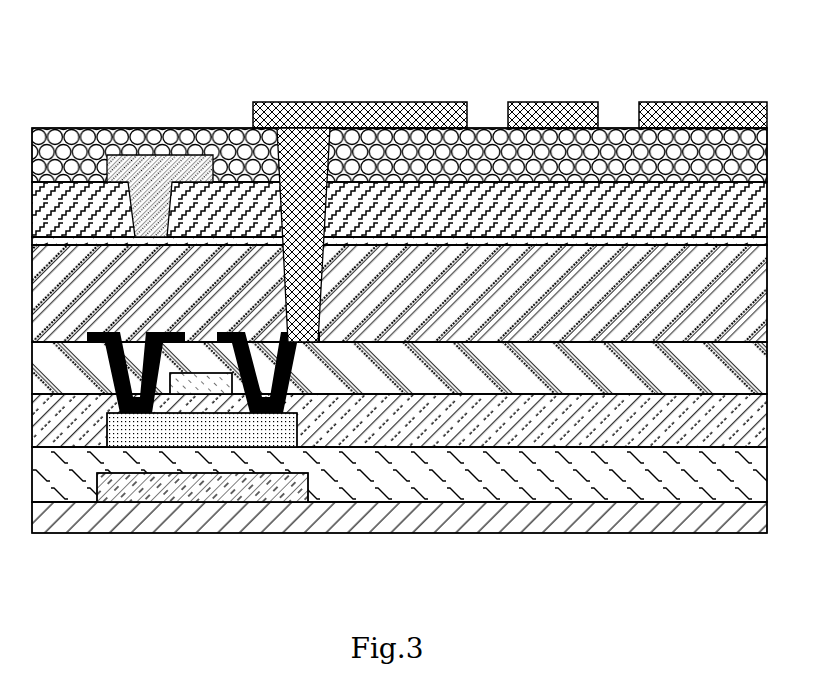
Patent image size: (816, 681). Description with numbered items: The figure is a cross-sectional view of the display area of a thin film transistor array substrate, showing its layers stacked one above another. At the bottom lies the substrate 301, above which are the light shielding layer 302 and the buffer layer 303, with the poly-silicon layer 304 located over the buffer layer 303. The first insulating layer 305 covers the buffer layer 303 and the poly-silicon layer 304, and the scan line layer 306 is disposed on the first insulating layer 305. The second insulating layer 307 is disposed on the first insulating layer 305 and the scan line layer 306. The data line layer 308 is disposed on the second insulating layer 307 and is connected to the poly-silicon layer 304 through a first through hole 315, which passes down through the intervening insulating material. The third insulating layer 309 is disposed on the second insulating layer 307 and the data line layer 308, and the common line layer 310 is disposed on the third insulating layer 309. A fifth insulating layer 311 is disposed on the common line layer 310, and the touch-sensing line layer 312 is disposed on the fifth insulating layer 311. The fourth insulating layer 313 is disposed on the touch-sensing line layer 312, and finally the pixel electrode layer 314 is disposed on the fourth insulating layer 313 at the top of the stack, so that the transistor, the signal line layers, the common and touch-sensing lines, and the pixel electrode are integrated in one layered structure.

The substrate 301 is at (453, 533).
The light shielding layer 302 is at (275, 502).
The buffer layer 303 is at (605, 502).
The poly-silicon layer 304 is at (128, 447).
The first insulating layer 305 is at (535, 448).
The scan line layer 306 is at (195, 394).
The second insulating layer 307 is at (420, 397).
The data line layer 308 is at (235, 332).
The third insulating layer 309 is at (385, 245).
The common line layer 310 is at (502, 247).
The fifth insulating layer 311 is at (615, 182).
The touch-sensing line layer 312 is at (128, 155).
The fourth insulating layer 313 is at (66, 128).
The pixel electrode layer 314 is at (437, 102).
The first through hole 315 is at (273, 165).